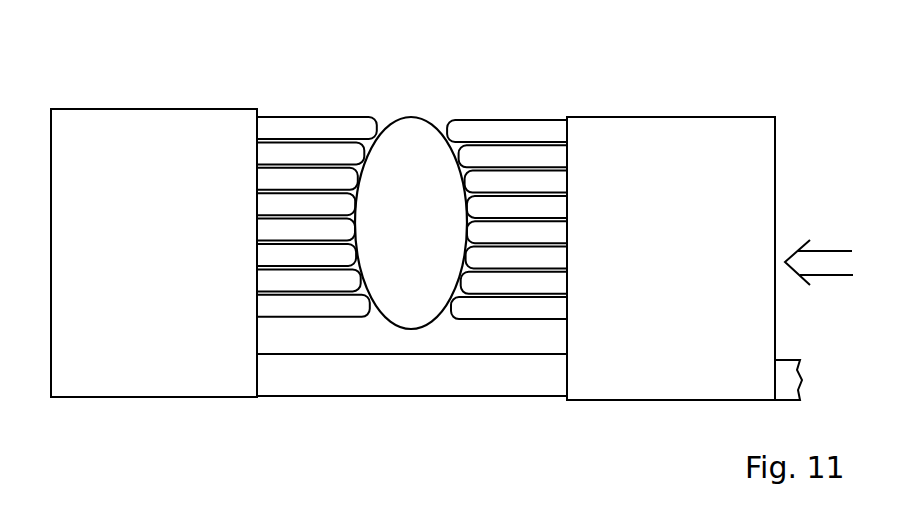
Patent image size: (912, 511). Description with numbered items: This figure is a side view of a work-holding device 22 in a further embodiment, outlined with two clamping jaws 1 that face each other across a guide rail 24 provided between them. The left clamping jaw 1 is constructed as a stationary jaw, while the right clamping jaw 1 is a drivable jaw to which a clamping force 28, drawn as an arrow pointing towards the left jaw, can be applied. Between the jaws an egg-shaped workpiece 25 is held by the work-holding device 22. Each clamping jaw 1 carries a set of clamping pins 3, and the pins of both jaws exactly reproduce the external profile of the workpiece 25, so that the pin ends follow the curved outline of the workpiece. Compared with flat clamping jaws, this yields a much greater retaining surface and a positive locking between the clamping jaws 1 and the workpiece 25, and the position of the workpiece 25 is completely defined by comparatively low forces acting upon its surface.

The work-holding device 22 is at (55, 94).
The clamping jaw 1 is at (172, 147).
The clamping pins 3 is at (322, 177).
The workpiece 25 is at (402, 167).
The guide rail 24 is at (400, 380).
The clamping force 28 is at (820, 258).